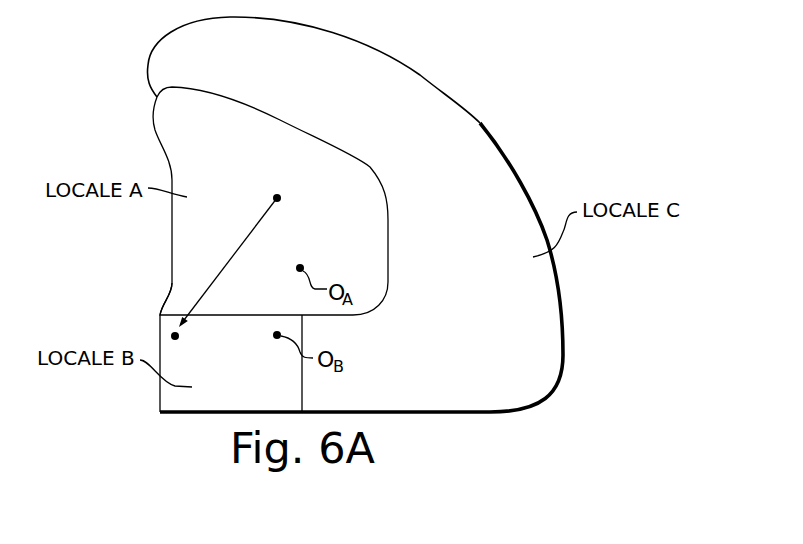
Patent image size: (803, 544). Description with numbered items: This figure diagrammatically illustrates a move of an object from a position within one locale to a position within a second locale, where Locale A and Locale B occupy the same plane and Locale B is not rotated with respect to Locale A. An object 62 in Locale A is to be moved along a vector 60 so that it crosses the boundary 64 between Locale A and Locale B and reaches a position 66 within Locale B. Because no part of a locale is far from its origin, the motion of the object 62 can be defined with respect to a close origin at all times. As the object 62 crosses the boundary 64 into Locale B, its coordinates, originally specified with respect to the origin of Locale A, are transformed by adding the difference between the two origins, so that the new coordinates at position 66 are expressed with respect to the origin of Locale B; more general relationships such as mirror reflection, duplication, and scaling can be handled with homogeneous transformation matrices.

The vector 60 is at (237, 250).
The object 62 is at (281, 197).
The boundary 64 is at (175, 315).
The position 66 is at (172, 336).